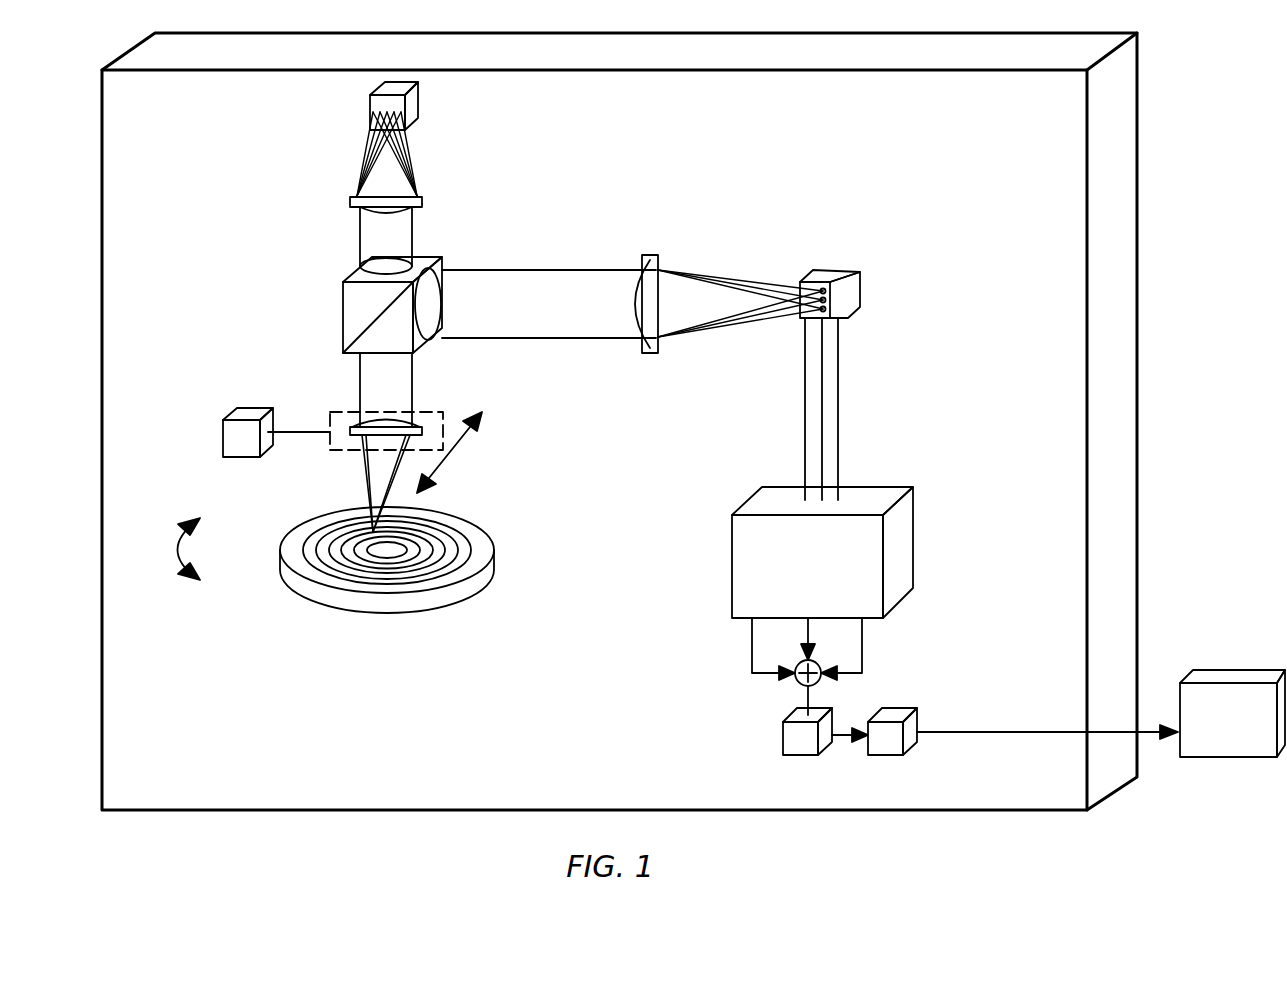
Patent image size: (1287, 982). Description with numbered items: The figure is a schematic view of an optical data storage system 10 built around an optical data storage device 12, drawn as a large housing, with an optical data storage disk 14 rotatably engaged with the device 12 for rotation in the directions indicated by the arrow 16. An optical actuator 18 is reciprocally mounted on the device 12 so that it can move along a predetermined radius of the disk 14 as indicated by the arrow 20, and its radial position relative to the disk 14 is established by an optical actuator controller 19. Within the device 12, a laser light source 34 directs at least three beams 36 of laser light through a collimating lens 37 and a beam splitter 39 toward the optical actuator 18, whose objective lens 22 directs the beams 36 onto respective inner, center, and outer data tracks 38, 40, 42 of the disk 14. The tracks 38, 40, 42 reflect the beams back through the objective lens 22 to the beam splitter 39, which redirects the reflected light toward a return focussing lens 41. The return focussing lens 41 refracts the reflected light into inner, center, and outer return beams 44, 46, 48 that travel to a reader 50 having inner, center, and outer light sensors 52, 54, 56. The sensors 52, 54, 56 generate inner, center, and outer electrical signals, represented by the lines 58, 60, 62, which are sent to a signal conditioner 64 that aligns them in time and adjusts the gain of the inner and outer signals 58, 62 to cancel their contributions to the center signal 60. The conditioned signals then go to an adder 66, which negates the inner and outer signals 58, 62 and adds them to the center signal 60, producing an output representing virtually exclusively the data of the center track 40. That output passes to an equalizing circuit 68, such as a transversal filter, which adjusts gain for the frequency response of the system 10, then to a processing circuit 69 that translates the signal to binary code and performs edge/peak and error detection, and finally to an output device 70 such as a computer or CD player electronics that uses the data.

The optical data storage system 10 is at (1165, 404).
The optical data storage device 12 is at (1110, 170).
The optical data storage disk 14 is at (413, 612).
The arrow 16 is at (168, 560).
The optical actuator 18 is at (353, 412).
The optical actuator controller 19 is at (250, 408).
The arrow 20 is at (465, 450).
The objective lens 22 is at (350, 433).
The laser light source 34 is at (416, 103).
The beams of laser light 36 is at (408, 158).
The collimating lens 37 is at (422, 198).
The inner data track 38 is at (343, 565).
The beam splitter 39 is at (435, 258).
The center data track 40 is at (329, 548).
The return focussing lens 41 is at (652, 256).
The outer data track 42 is at (320, 540).
The inner return beam 44 is at (690, 272).
The center return beam 46 is at (725, 282).
The outer return beam 48 is at (770, 291).
The reader 50 is at (835, 270).
The inner light sensor 52 is at (848, 281).
The center light sensor 54 is at (832, 298).
The outer light sensor 56 is at (845, 317).
The inner electrical signal 58 is at (805, 383).
The center electrical signal 60 is at (822, 372).
The outer electrical signal 62 is at (838, 420).
The signal conditioner 64 is at (898, 553).
The adder 66 is at (795, 679).
The equalizing circuit 68 is at (805, 757).
The processing circuit 69 is at (890, 757).
The output device 70 is at (1228, 758).